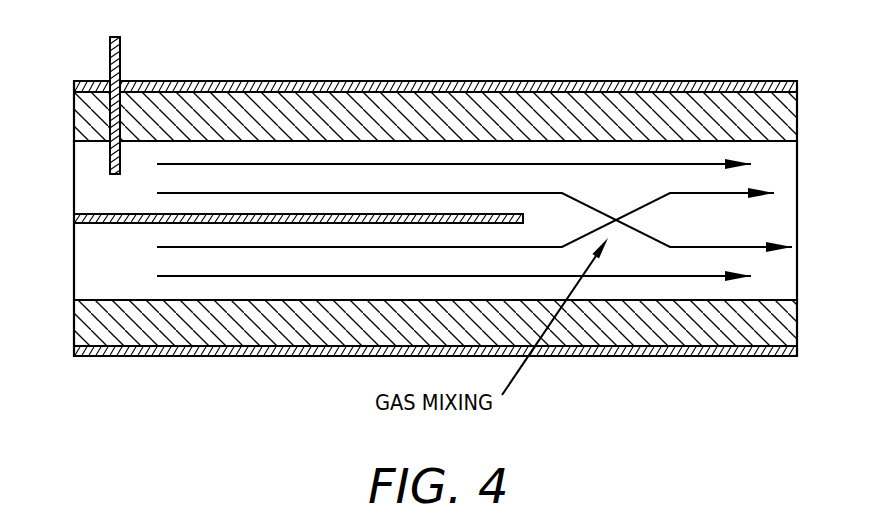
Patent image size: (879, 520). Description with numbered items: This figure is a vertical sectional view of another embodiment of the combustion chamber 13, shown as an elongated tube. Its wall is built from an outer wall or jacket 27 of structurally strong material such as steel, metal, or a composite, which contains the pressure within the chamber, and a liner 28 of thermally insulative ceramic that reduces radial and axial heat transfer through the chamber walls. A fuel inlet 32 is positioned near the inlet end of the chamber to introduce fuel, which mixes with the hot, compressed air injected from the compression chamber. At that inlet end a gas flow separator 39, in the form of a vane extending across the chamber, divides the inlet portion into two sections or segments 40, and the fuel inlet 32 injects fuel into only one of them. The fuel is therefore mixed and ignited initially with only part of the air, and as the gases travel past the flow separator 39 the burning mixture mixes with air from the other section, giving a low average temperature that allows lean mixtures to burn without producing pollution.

The combustion chamber 13 is at (508, 155).
The outer wall or jacket 27 is at (358, 82).
The liner 28 is at (138, 335).
The fuel inlet 32 is at (110, 43).
The gas flow separator 39 is at (118, 215).
The sections or segments 40 is at (233, 177).